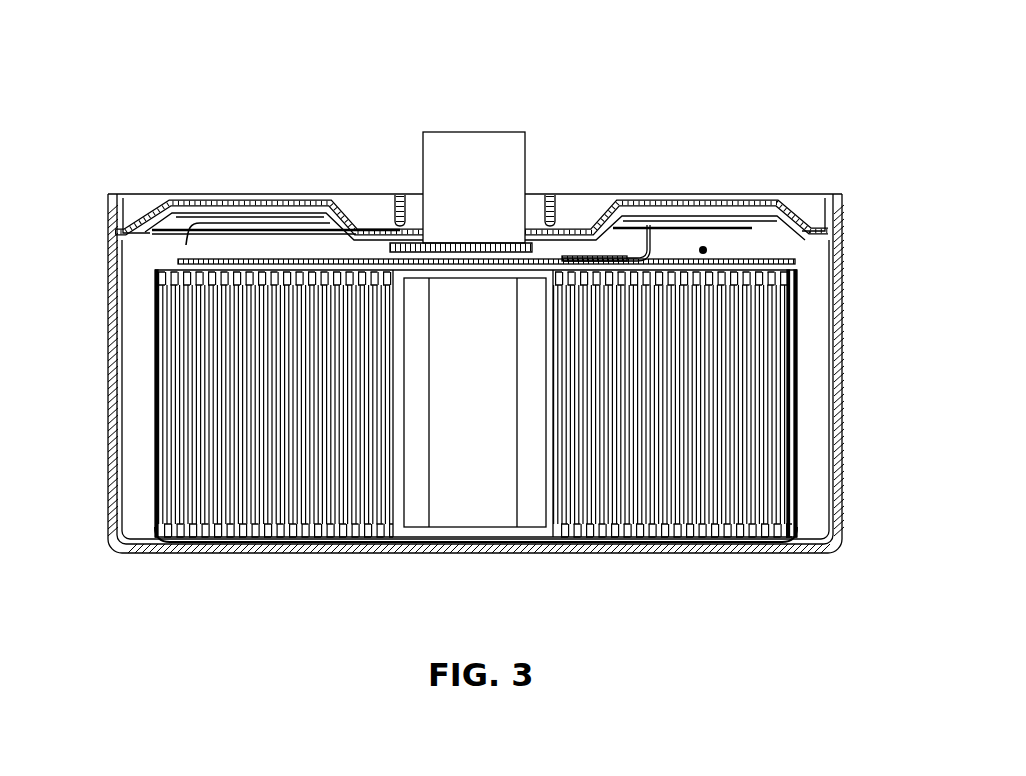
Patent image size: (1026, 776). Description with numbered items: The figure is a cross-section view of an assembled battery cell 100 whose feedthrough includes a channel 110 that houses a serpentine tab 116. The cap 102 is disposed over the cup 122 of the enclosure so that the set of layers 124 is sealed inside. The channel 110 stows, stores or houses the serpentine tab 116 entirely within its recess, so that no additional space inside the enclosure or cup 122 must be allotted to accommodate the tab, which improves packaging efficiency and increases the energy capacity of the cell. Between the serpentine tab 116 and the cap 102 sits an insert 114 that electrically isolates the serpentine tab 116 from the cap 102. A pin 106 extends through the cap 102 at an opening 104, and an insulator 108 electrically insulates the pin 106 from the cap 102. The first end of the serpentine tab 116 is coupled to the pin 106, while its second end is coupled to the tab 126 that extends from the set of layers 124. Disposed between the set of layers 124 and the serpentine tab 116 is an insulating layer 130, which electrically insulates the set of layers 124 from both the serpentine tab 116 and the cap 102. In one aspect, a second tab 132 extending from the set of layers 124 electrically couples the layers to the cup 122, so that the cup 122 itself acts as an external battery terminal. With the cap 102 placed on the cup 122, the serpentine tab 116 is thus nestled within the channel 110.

The battery cell 100 is at (81, 40).
The cap 102 is at (122, 207).
The opening 104 is at (397, 197).
The pin 106 is at (423, 158).
The insulator 108 is at (531, 213).
The channel 110 is at (221, 204).
The insert 114 is at (153, 236).
The serpentine tab 116 is at (186, 245).
The cup 122 is at (108, 467).
The set of layers 124 is at (155, 402).
The tab 126 is at (707, 249).
The insulating layer 130 is at (790, 258).
The second tab 132 is at (262, 542).